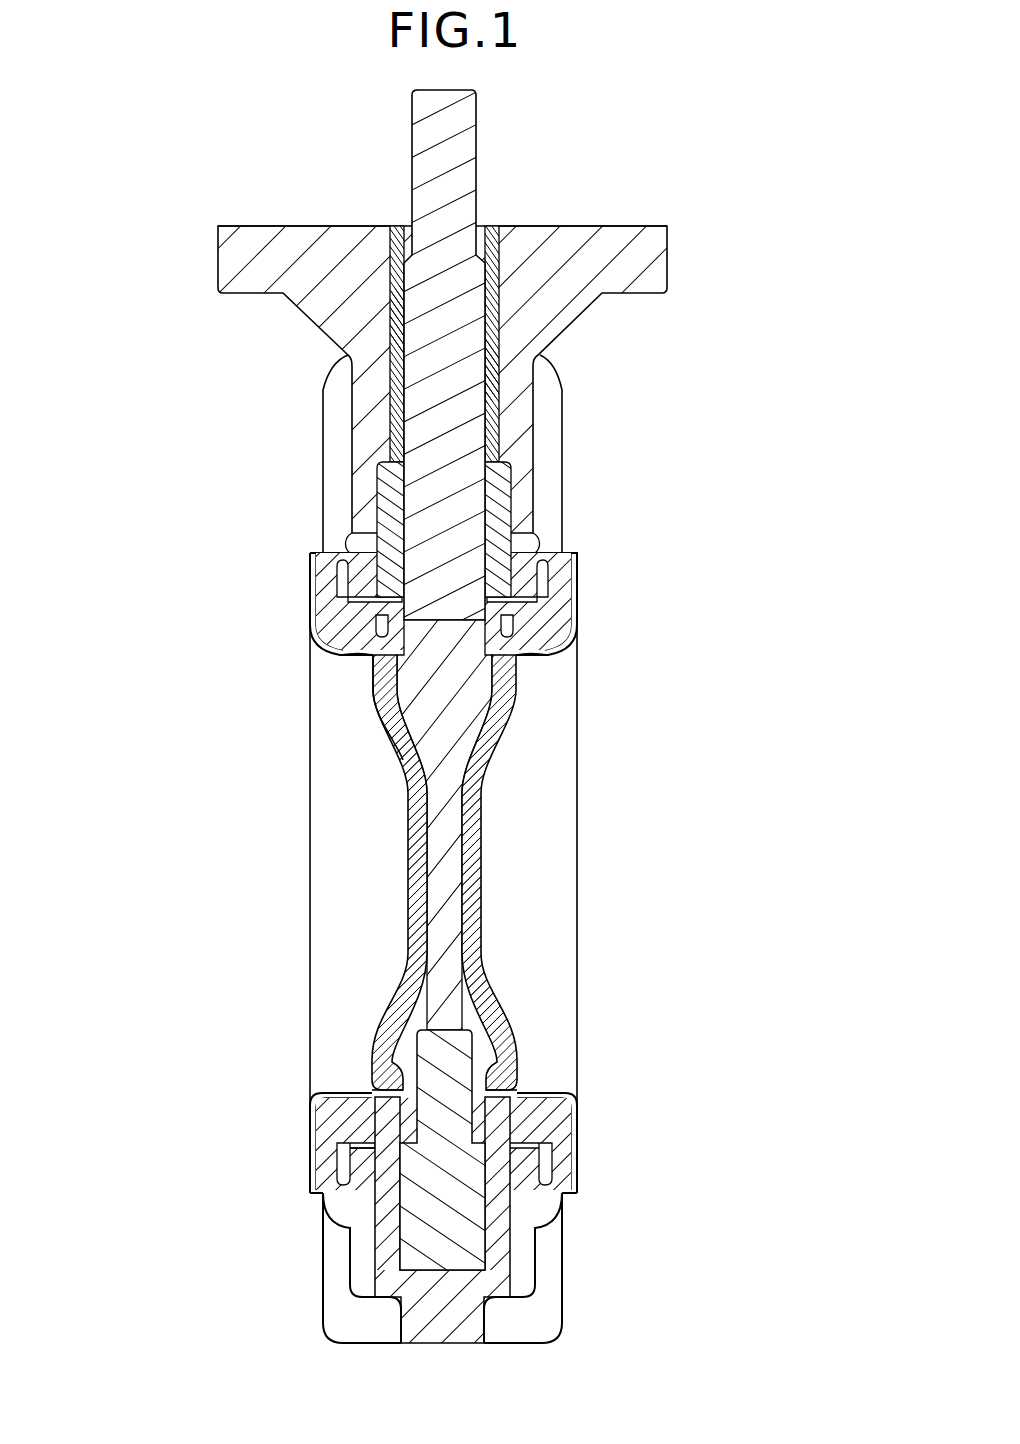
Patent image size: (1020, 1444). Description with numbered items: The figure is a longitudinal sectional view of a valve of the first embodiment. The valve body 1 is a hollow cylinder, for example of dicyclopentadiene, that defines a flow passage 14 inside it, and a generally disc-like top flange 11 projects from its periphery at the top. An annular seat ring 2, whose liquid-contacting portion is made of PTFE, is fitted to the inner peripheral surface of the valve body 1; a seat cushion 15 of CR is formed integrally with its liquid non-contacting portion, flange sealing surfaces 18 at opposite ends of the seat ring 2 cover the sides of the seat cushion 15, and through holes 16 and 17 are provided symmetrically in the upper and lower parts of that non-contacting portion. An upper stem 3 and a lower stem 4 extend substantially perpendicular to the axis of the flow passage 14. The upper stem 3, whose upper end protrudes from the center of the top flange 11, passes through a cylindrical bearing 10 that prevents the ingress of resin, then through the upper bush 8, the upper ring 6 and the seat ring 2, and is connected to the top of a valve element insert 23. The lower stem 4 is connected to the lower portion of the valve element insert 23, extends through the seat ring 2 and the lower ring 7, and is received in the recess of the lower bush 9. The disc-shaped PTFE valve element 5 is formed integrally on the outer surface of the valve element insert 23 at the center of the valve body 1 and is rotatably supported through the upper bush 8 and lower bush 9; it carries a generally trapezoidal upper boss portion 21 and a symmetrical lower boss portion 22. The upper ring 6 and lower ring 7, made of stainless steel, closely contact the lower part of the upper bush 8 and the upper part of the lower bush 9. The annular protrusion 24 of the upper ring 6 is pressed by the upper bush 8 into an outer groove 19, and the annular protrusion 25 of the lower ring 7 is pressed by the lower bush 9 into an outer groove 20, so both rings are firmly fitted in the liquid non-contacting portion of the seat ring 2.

The valve body 1 is at (366, 357).
The seat ring 2 is at (337, 675).
The upper stem 3 is at (458, 125).
The lower stem 4 is at (455, 1197).
The valve element 5 is at (414, 832).
The upper ring 6 is at (566, 572).
The lower ring 7 is at (313, 1123).
The upper bush 8 is at (498, 493).
The lower bush 9 is at (387, 1251).
The bearing 10 is at (492, 296).
The top flange 11 is at (277, 243).
The flow passage 14 is at (517, 805).
The seat cushion 15 is at (395, 632).
The through hole 16 is at (337, 625).
The through hole 17 is at (490, 1118).
The flange sealing surface 18 is at (313, 575).
The outer groove 19 is at (397, 653).
The outer groove 20 is at (505, 1093).
The upper boss portion 21 is at (507, 647).
The lower boss portion 22 is at (383, 1103).
The valve element insert 23 is at (452, 848).
The annular protrusion 24 is at (500, 630).
The annular protrusion 25 is at (377, 1091).